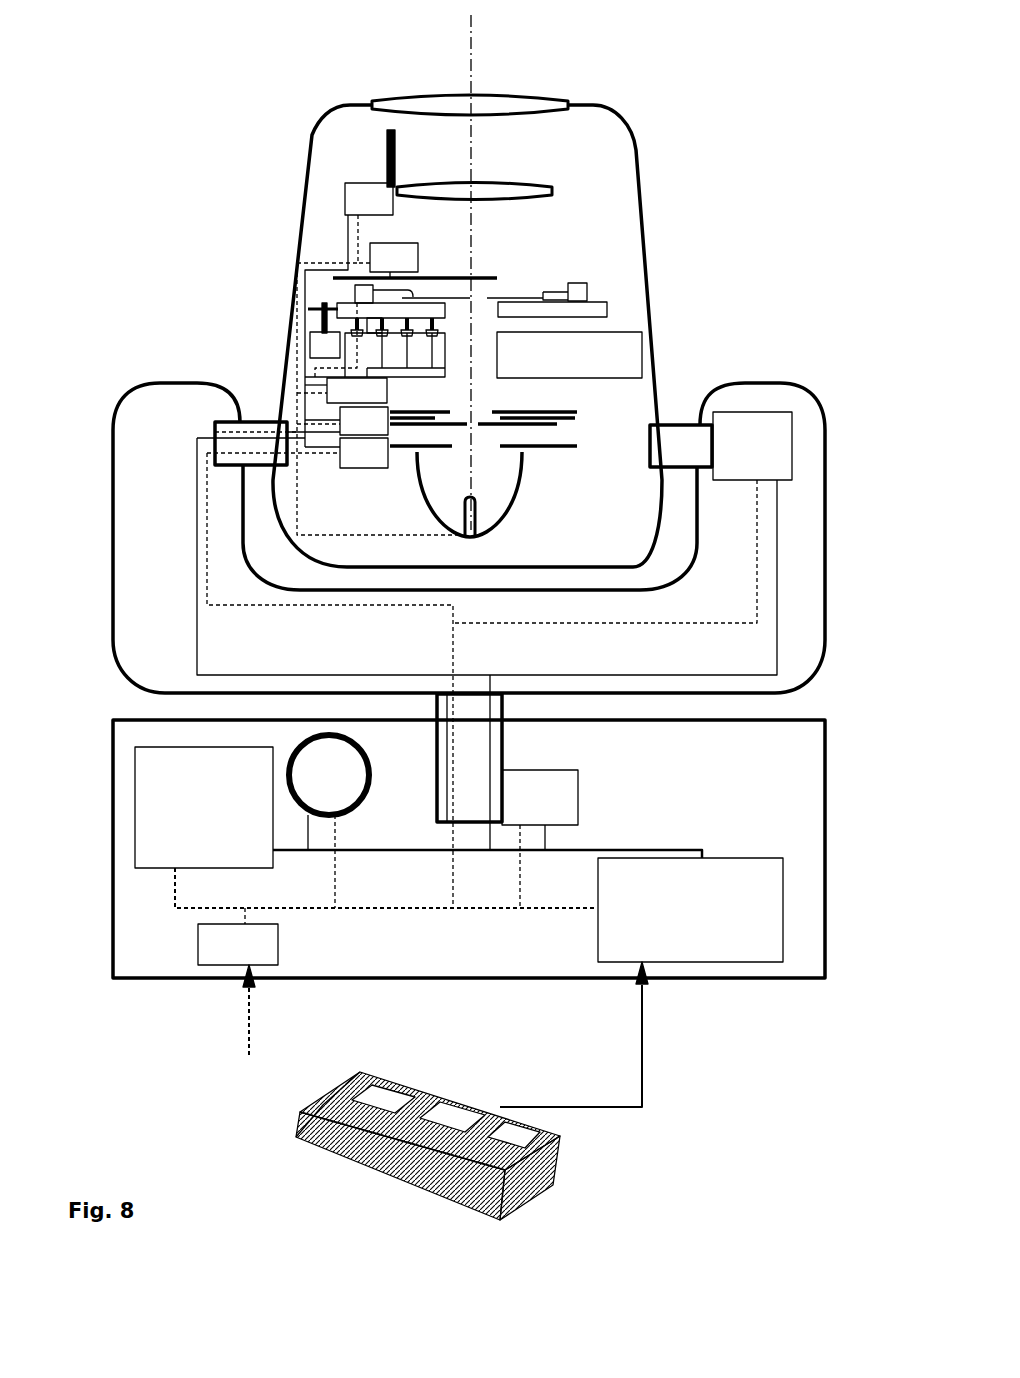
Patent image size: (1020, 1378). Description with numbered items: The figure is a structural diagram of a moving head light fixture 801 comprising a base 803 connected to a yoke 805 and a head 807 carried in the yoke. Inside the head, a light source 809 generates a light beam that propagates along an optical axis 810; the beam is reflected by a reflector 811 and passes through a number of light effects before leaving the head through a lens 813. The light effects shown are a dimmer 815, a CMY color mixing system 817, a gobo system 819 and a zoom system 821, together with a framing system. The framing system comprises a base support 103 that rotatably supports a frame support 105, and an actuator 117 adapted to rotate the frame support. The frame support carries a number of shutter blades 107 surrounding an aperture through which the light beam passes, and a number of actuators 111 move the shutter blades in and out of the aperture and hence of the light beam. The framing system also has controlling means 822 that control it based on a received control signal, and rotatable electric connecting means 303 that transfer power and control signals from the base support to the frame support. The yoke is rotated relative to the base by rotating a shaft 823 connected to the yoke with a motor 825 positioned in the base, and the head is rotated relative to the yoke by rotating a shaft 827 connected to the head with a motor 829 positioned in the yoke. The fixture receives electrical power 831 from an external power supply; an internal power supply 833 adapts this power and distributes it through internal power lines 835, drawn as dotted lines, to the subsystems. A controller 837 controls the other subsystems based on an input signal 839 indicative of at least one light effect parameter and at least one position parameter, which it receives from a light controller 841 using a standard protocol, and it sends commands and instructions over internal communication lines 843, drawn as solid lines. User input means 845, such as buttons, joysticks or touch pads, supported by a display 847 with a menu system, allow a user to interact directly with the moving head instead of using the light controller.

The moving head light fixture 801 is at (258, 68).
The base 803 is at (733, 980).
The yoke 805 is at (165, 383).
The head 807 is at (640, 178).
The light source 809 is at (473, 518).
The optical axis 810 is at (465, 53).
The reflector 811 is at (518, 473).
The lens 813 is at (542, 105).
The dimmer 815 is at (392, 453).
The CMY color mixing system 817 is at (396, 421).
The gobo system 819 is at (415, 260).
The zoom system 821 is at (378, 359).
The controlling means 822 is at (342, 391).
The shaft 823 is at (502, 747).
The motor 825 is at (540, 839).
The shaft 827 is at (680, 448).
The motor 829 is at (622, 517).
The electrical power 831 is at (245, 1035).
The internal power supply 833 is at (238, 936).
The internal power lines 835 is at (402, 908).
The controller 837 is at (690, 910).
The input signal 839 is at (645, 1030).
The light controller 841 is at (543, 1183).
The internal communication lines 843 is at (563, 850).
The user input means 845 is at (329, 821).
The display 847 is at (204, 807).
The base support 103 is at (640, 332).
The frame support 105 is at (607, 315).
The shutter blades 107 is at (513, 297).
The actuators 111 is at (587, 288).
The actuator 117 is at (315, 342).
The rotatable electric connecting means 303 is at (347, 330).